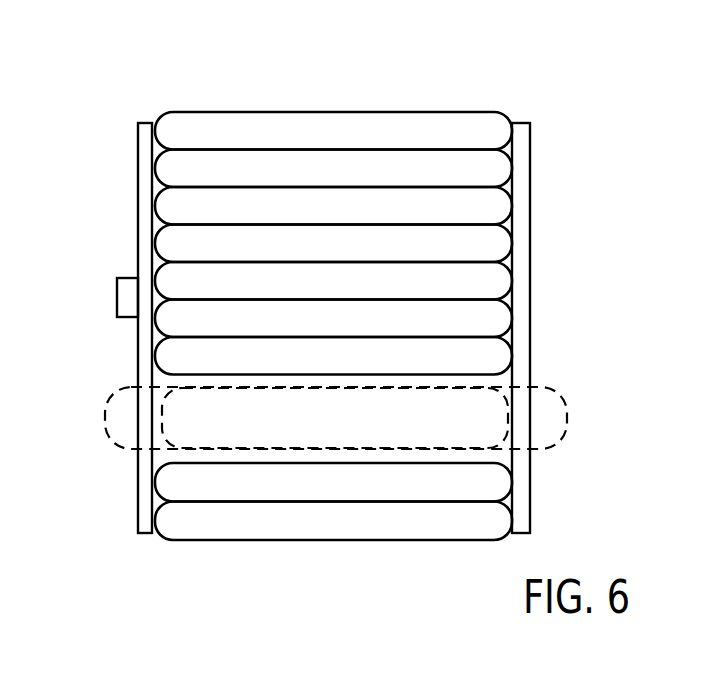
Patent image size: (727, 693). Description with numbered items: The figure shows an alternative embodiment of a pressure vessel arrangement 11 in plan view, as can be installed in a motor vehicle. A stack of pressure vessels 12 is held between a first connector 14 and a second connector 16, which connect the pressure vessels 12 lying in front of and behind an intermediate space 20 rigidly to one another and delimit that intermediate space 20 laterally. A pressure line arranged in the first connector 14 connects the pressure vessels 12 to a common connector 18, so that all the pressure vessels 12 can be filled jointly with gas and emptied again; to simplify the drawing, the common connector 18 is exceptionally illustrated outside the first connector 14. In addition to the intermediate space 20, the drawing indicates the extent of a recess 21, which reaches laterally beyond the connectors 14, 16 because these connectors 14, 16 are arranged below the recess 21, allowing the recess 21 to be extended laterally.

The pressure vessel arrangement 11 is at (396, 82).
The pressure vessel 12 is at (255, 541).
The first connector 14 is at (138, 188).
The connector 16 is at (530, 172).
The common connector 18 is at (117, 298).
The intermediate space 20 is at (504, 388).
The recess 21 is at (568, 400).